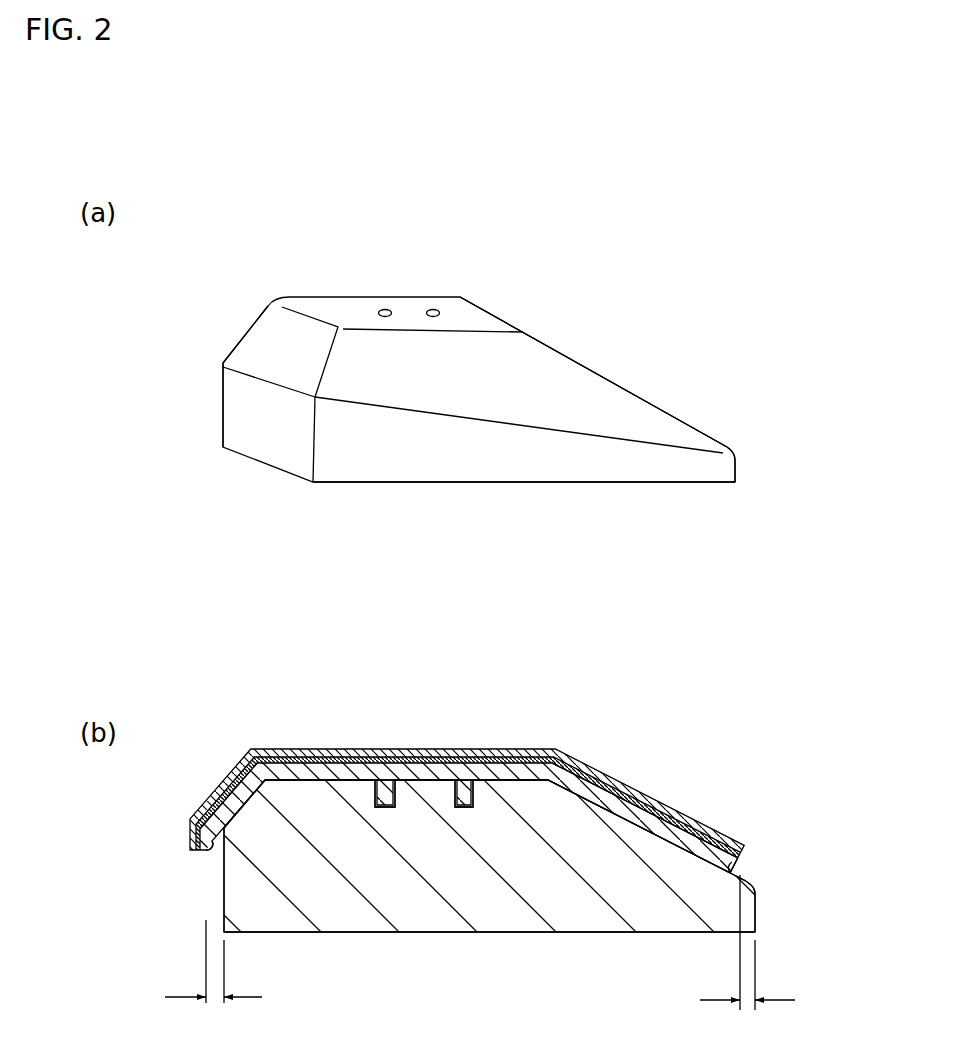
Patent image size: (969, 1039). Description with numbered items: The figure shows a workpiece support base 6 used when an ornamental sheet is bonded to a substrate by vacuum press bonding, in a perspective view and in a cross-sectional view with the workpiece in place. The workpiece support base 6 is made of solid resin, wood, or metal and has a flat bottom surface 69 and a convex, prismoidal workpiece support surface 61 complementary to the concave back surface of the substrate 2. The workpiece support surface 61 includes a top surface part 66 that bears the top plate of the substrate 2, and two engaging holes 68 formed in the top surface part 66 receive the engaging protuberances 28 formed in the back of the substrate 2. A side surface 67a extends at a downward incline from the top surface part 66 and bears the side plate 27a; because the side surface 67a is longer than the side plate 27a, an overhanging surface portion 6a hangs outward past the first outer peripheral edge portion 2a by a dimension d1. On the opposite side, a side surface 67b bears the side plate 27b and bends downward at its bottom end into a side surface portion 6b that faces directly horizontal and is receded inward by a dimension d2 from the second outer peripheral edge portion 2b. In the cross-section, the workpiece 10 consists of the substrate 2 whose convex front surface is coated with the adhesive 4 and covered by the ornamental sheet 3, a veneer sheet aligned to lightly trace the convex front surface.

The substrate 2 is at (329, 768).
The first outer peripheral edge portion 2a is at (738, 873).
The second outer peripheral edge portion 2b is at (217, 851).
The ornamental sheet 3 is at (262, 749).
The adhesive 4 is at (300, 757).
The workpiece support base 6 is at (492, 255).
The overhanging surface portion 6a is at (732, 448).
The side surface portion 6b is at (250, 440).
The workpiece 10 is at (686, 777).
The side plate 27a is at (622, 808).
The side plate 27b is at (228, 795).
The engaging protuberances 28 is at (384, 792).
The workpiece support surface 61 is at (540, 313).
The top surface part 66 is at (457, 300).
The side surface 67a is at (610, 372).
The side surface 67b is at (253, 343).
The engaging holes 68 is at (419, 307).
The bottom surface 69 is at (473, 482).
The dimension d1 is at (747, 957).
The dimension d2 is at (213, 978).